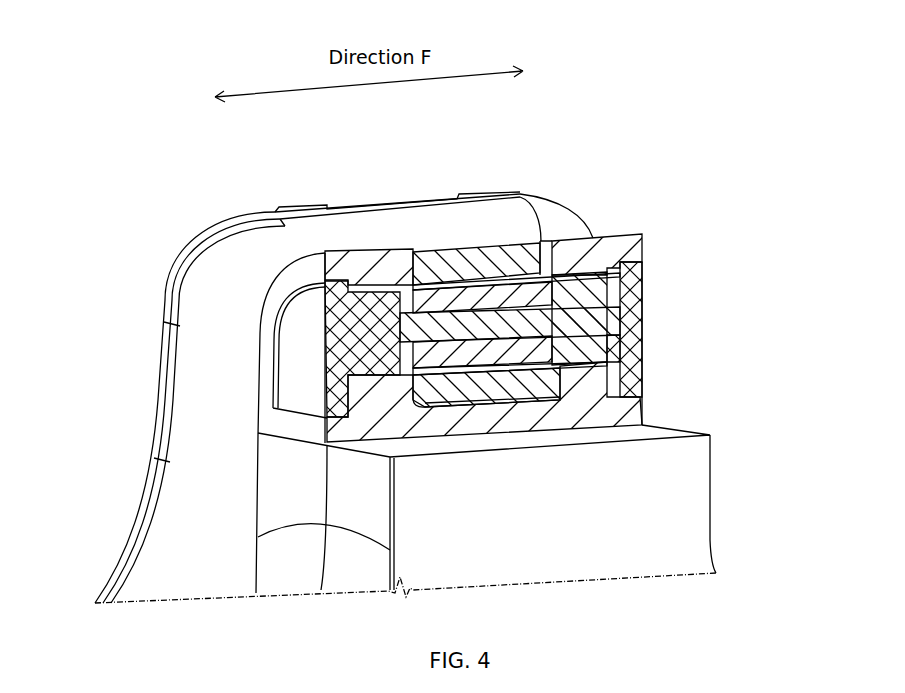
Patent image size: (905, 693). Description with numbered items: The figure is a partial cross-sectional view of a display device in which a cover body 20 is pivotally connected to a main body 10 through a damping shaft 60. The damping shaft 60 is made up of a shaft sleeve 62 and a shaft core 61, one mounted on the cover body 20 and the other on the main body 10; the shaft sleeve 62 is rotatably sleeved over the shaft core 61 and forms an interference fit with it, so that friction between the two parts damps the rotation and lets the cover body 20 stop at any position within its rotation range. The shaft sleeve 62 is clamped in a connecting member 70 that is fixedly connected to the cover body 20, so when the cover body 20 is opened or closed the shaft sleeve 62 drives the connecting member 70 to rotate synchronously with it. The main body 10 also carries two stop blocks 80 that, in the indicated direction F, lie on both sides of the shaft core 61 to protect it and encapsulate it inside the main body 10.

The main body 10 is at (622, 508).
The cover body 20 is at (410, 222).
The damping shaft 60 is at (720, 182).
The shaft core 61 is at (525, 395).
The shaft sleeve 62 is at (567, 333).
The connecting member 70 is at (508, 250).
The stop blocks 80 is at (308, 322).